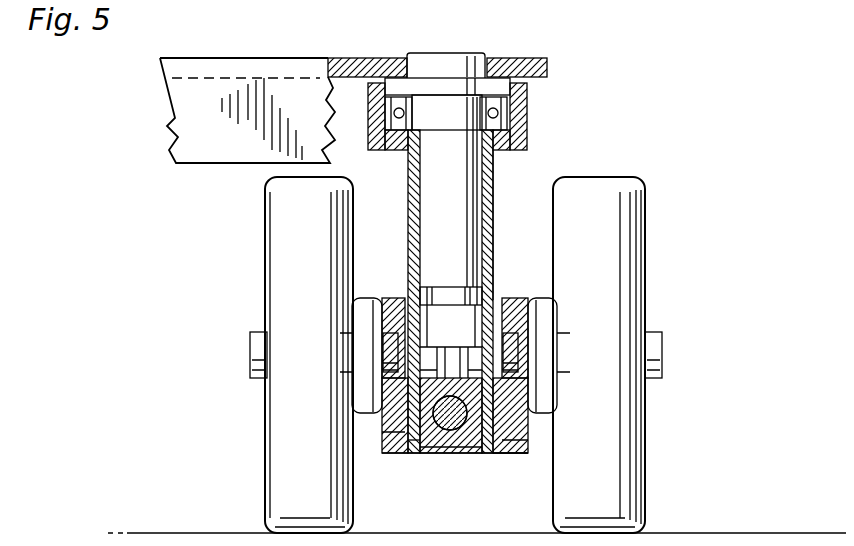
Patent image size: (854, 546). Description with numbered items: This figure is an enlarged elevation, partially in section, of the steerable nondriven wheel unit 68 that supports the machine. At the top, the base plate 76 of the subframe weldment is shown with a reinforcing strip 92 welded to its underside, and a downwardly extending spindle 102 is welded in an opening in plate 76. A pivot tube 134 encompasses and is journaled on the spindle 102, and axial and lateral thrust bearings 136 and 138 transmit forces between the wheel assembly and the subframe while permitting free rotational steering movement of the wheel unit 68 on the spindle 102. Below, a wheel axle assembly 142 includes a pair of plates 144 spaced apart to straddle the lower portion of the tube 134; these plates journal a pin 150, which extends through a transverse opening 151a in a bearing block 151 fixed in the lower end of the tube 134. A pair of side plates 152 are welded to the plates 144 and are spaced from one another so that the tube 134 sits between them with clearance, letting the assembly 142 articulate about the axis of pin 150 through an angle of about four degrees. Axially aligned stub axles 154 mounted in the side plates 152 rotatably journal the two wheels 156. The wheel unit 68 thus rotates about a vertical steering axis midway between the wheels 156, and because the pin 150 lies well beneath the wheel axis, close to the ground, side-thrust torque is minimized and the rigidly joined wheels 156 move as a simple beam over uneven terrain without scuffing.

The steerable wheel unit 68 is at (453, 293).
The base plate 76 is at (405, 30).
The reinforcing strip 92 is at (208, 142).
The spindle 102 is at (410, 170).
The pivot tube 134 is at (497, 175).
The thrust bearing 136 is at (527, 104).
The thrust bearing 138 is at (410, 292).
The wheel axle assembly 142 is at (522, 457).
The plates 144 is at (493, 300).
The pin 150 is at (450, 443).
The bearing block 151 is at (447, 457).
The transverse opening 151a is at (427, 453).
The side plates 152 is at (383, 432).
The stub axles 154 is at (375, 340).
The wheels 156 is at (285, 497).